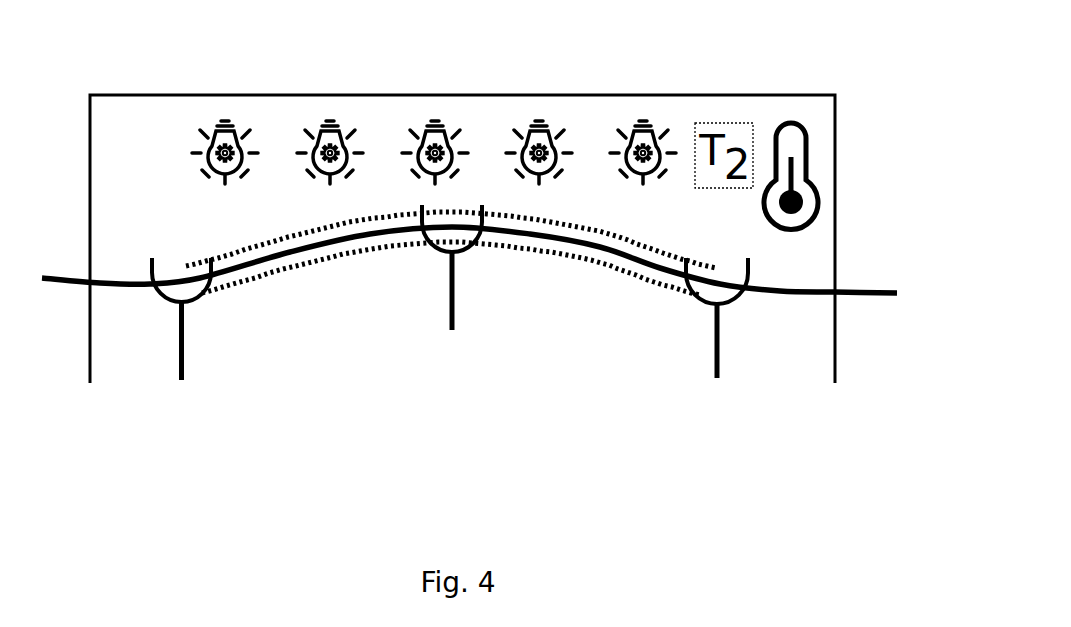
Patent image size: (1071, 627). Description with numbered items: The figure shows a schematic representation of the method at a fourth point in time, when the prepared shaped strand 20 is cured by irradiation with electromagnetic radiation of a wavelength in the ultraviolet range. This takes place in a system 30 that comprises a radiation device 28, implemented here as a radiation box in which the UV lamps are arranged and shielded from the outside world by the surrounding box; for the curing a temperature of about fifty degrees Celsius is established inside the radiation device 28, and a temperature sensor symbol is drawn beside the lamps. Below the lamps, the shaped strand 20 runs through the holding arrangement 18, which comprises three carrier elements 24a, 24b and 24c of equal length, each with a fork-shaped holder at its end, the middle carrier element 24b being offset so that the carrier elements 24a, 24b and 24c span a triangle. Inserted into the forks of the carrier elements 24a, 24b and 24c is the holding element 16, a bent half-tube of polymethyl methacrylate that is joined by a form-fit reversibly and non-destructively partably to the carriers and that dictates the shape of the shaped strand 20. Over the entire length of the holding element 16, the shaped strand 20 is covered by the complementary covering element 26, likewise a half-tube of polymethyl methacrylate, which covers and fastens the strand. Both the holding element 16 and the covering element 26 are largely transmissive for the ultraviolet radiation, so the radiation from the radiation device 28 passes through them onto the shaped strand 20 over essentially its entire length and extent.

The system 30 is at (124, 88).
The radiation device 28 is at (683, 128).
The shaped strand 20 is at (56, 279).
The covering element 26 is at (229, 252).
The holding element 16 is at (627, 275).
The carrier element 24a is at (182, 380).
The carrier element 24b is at (452, 330).
The carrier element 24c is at (717, 378).
The holding arrangement 18 is at (152, 433).